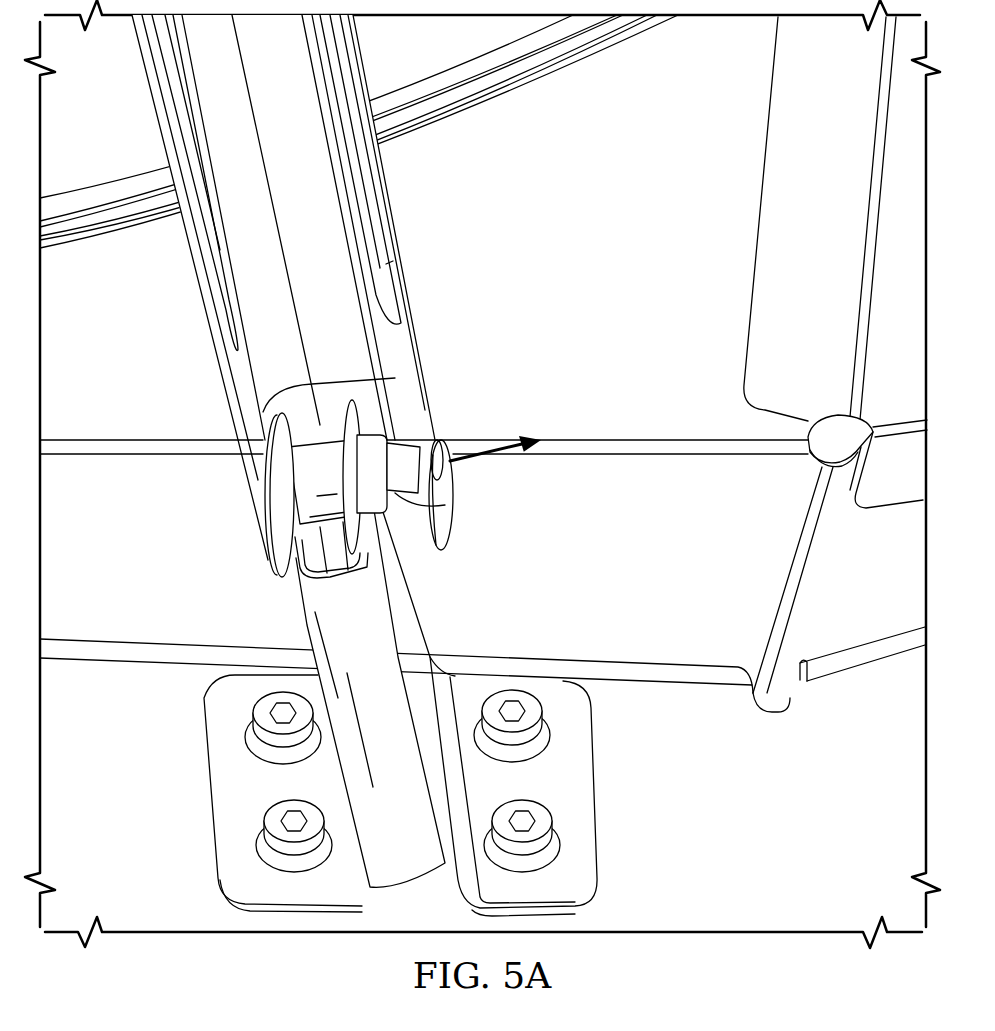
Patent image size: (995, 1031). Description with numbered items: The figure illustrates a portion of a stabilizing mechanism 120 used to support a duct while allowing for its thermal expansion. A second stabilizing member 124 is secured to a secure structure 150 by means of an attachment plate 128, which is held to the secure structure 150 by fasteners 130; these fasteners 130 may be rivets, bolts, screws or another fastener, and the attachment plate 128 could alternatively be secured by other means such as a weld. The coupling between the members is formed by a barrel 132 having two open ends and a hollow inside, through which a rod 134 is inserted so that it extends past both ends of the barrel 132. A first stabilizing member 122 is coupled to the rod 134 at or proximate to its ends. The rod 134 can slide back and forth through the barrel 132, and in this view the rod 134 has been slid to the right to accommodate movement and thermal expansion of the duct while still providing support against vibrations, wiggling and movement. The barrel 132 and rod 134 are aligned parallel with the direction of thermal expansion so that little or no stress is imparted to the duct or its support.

The stabilizing mechanism 120 is at (516, 222).
The first stabilizing member 122 is at (422, 355).
The second stabilizing member 124 is at (302, 605).
The attachment plate 128 is at (213, 837).
The fasteners 130 is at (267, 807).
The barrel 132 is at (313, 460).
The rod 134 is at (420, 500).
The secure structure 150 is at (647, 707).